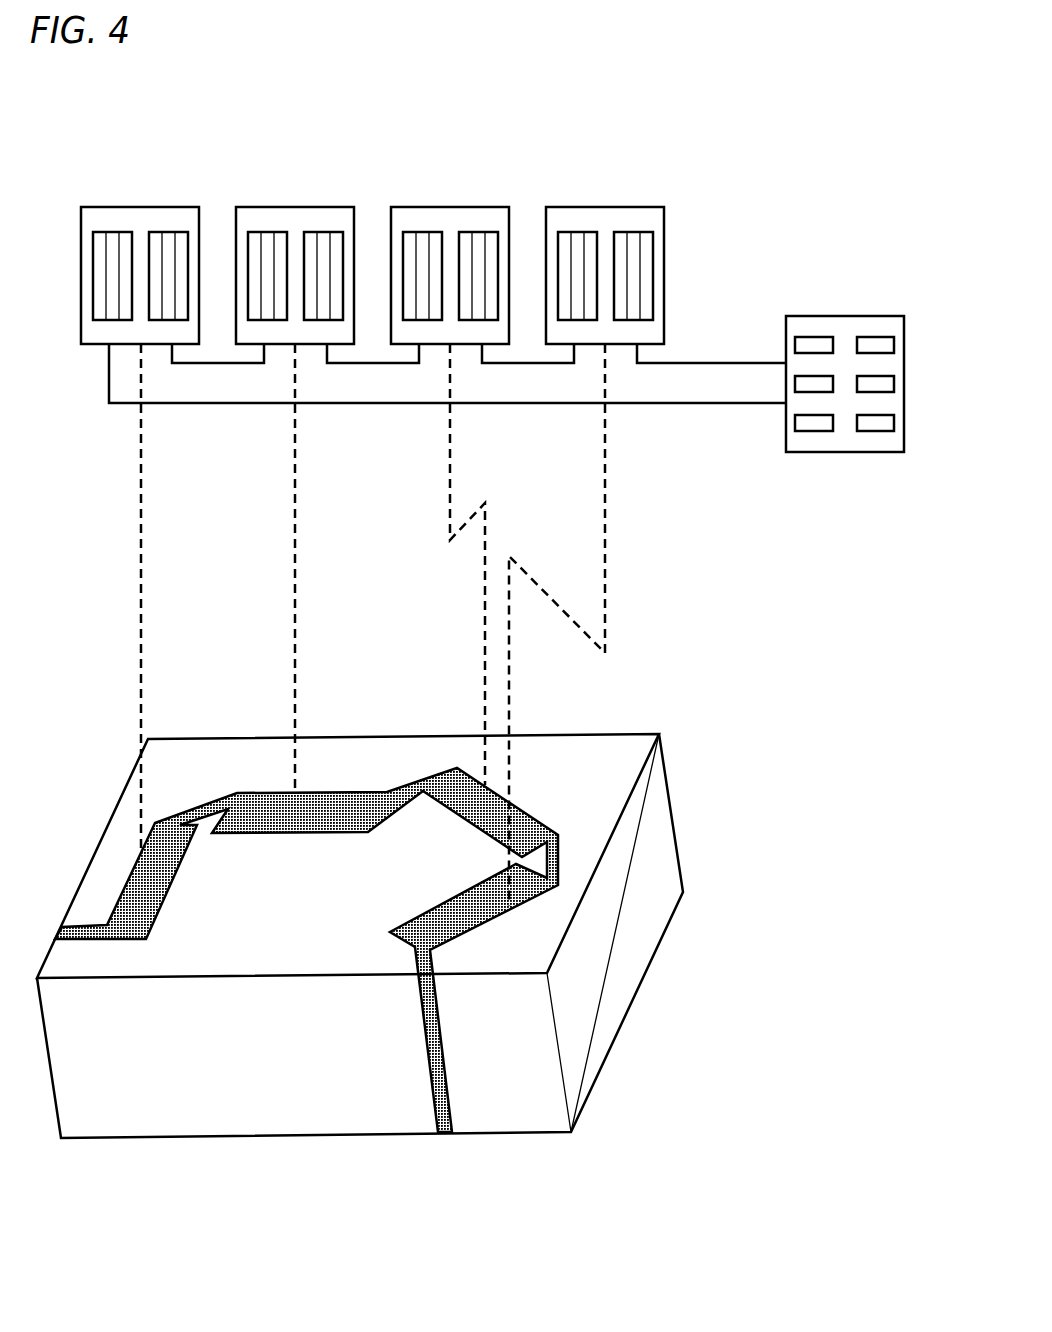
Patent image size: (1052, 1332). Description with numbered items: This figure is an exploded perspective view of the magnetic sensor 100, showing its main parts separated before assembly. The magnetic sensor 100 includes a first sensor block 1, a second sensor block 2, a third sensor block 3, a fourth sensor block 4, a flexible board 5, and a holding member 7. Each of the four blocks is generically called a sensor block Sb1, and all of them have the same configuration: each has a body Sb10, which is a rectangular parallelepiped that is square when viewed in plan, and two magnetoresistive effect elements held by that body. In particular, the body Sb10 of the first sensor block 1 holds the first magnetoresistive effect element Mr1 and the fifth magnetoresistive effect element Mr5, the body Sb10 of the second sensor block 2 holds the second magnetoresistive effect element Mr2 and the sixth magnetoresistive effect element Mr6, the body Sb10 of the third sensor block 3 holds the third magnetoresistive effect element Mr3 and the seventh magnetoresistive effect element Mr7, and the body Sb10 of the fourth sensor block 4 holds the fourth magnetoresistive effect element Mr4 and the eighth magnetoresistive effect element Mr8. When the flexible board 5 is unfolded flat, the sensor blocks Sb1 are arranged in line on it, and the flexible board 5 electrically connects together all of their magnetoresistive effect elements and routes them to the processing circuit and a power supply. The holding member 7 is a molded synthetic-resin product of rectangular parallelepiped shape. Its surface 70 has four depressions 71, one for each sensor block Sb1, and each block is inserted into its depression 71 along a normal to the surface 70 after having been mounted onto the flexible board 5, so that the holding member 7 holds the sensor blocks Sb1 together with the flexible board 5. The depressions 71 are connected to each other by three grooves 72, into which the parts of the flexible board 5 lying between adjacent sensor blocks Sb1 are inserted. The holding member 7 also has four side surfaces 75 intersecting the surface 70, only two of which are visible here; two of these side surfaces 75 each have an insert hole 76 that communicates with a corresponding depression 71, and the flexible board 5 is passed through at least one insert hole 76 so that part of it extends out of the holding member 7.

The magnetic sensor 100 is at (843, 182).
The first sensor block 1 is at (208, 134).
The second sensor block 2 is at (363, 134).
The third sensor block 3 is at (518, 134).
The fourth sensor block 4 is at (673, 134).
The sensor block Sb1 is at (377, 217).
The body Sb10 is at (146, 215).
The first magnetoresistive effect element Mr1 is at (114, 236).
The second magnetoresistive effect element Mr2 is at (269, 236).
The third magnetoresistive effect element Mr3 is at (424, 236).
The fourth magnetoresistive effect element Mr4 is at (579, 236).
The fifth magnetoresistive effect element Mr5 is at (179, 236).
The sixth magnetoresistive effect element Mr6 is at (334, 236).
The seventh magnetoresistive effect element Mr7 is at (489, 236).
The eighth magnetoresistive effect element Mr8 is at (644, 236).
The flexible board 5 is at (875, 323).
The holding member 7 is at (620, 998).
The surface 70 is at (238, 750).
The depression 71 is at (170, 882).
The groove 72 is at (203, 803).
The side surface 75 is at (665, 833).
The insert hole 76 is at (77, 927).